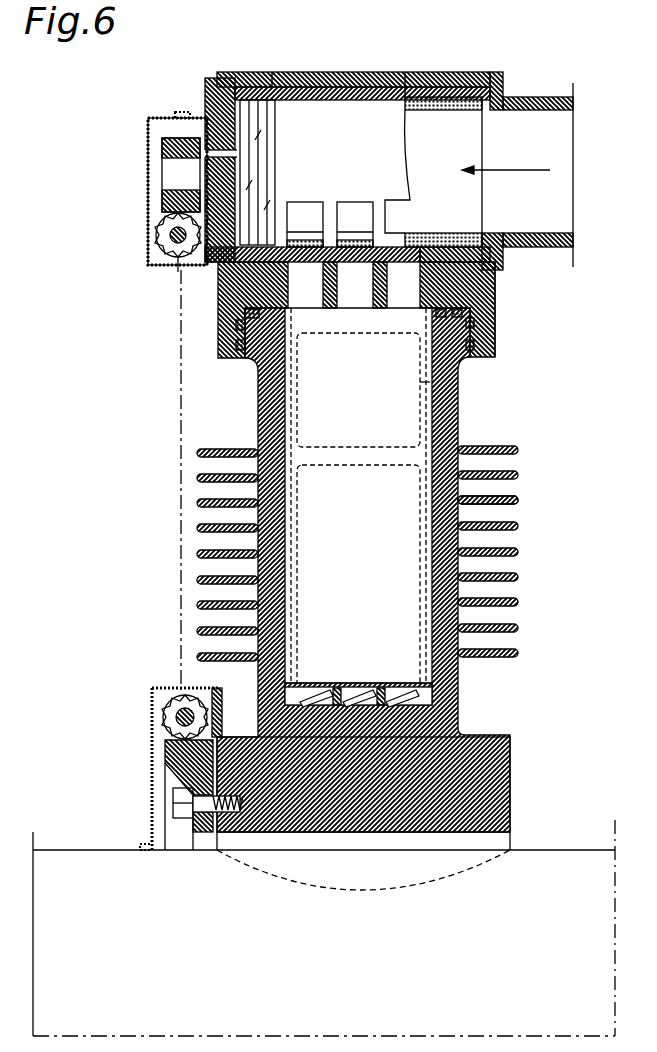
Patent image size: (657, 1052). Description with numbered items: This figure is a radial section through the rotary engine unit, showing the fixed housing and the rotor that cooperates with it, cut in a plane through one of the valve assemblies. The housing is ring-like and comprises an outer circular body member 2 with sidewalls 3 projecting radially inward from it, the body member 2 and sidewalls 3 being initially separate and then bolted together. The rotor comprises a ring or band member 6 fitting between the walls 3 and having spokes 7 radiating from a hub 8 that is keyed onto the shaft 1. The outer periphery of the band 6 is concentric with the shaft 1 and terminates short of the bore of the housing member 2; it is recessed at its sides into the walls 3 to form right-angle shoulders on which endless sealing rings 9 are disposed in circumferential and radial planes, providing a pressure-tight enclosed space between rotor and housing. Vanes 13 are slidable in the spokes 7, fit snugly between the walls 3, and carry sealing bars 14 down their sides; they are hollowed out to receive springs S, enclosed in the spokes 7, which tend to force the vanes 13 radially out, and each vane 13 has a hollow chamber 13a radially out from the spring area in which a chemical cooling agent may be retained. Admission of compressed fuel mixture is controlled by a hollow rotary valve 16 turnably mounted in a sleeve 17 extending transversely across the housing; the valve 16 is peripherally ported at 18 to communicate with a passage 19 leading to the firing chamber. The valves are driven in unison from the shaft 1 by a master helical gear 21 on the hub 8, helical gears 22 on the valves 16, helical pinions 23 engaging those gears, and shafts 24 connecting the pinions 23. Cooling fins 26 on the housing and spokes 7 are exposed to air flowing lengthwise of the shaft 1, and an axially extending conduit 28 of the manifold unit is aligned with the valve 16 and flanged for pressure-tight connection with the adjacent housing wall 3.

The shaft 1 is at (536, 866).
The outer circular body member 2 is at (322, 73).
The sidewalls 3 is at (222, 281).
The ring or band member 6 is at (497, 345).
The spokes 7 is at (462, 538).
The hub 8 is at (500, 765).
The sealing rings 9 is at (248, 314).
The vanes 13 is at (312, 530).
The hollow chamber 13a is at (437, 382).
The sealing bars 14 is at (292, 411).
The hollow rotary valve 16 is at (447, 111).
The sleeve 17 is at (458, 253).
The ports 18 is at (358, 212).
The passage 19 is at (350, 300).
The master helical gear 21 is at (178, 752).
The helical gears 22 is at (170, 196).
The helical pinions 23 is at (160, 243).
The shafts 24 is at (178, 262).
The cooling fins 26 is at (520, 500).
The axially extending conduits 28 is at (533, 98).
The springs S is at (331, 692).